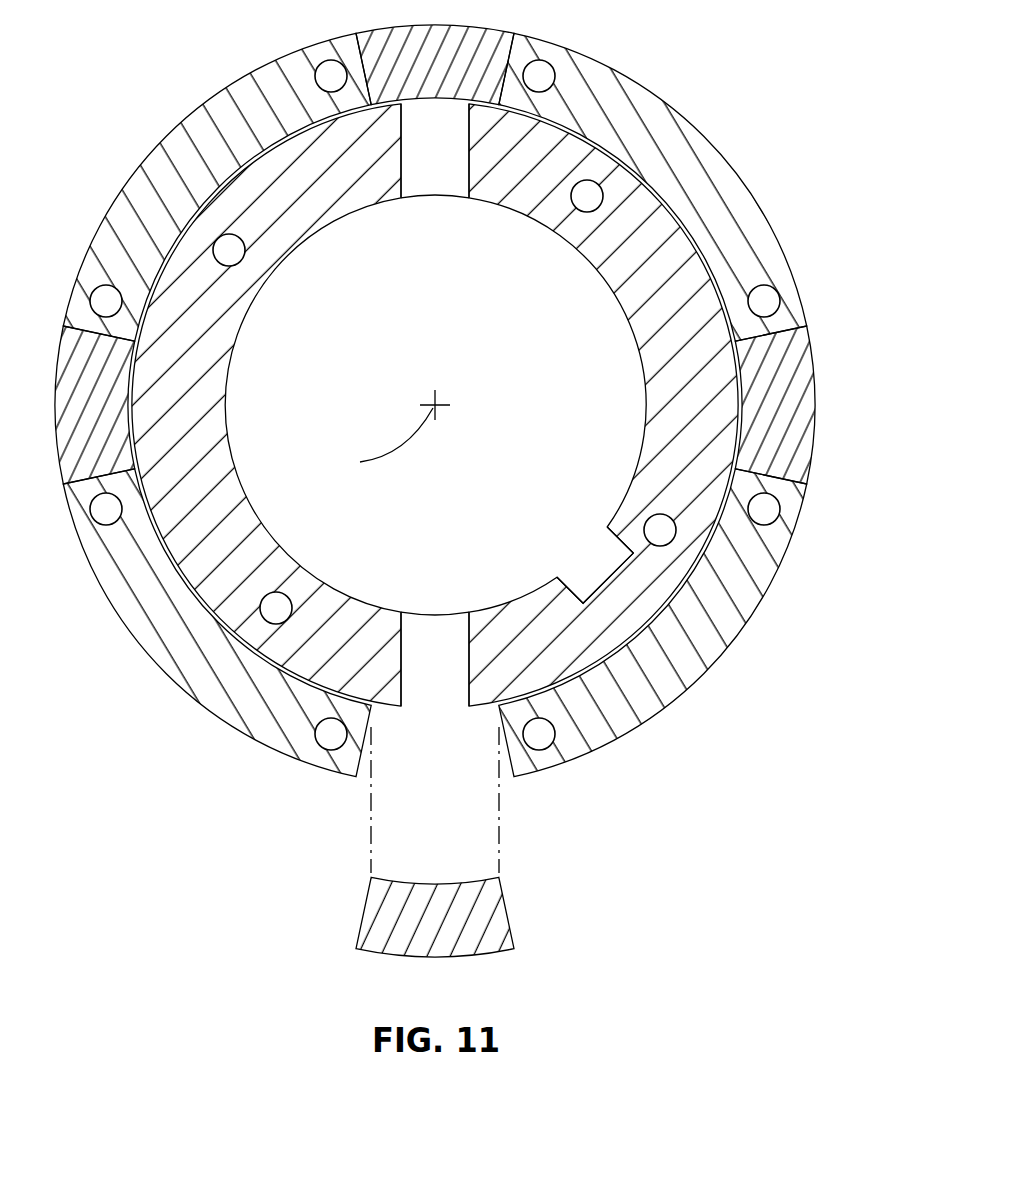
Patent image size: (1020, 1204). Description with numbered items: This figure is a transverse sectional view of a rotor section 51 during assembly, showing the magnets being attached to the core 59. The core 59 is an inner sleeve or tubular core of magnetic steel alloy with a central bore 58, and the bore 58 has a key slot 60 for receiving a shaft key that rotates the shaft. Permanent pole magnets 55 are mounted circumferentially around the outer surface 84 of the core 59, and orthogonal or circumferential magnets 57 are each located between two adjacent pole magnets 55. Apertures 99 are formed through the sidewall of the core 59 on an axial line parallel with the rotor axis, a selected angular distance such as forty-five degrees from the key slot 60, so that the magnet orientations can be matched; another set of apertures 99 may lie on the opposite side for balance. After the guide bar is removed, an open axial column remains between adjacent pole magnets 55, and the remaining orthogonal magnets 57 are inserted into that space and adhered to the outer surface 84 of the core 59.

The rotor section 51 is at (435, 485).
The pole magnet 55 is at (640, 705).
The orthogonal magnet 57 is at (505, 908).
The bore 58 is at (645, 398).
The core 59 is at (642, 205).
The key slot 60 is at (605, 575).
The outer surface 84 is at (387, 710).
The aperture 99 is at (468, 614).